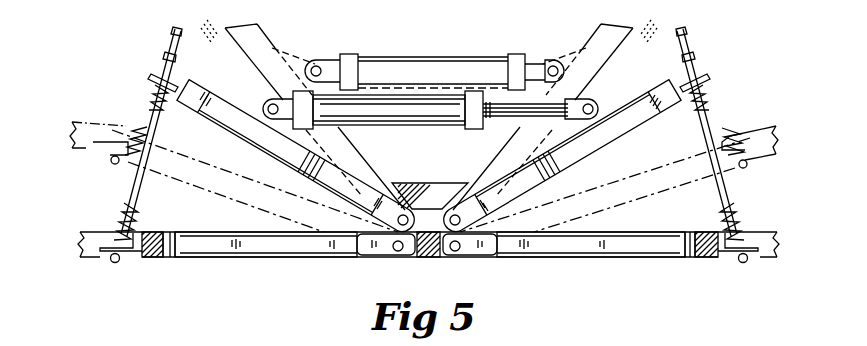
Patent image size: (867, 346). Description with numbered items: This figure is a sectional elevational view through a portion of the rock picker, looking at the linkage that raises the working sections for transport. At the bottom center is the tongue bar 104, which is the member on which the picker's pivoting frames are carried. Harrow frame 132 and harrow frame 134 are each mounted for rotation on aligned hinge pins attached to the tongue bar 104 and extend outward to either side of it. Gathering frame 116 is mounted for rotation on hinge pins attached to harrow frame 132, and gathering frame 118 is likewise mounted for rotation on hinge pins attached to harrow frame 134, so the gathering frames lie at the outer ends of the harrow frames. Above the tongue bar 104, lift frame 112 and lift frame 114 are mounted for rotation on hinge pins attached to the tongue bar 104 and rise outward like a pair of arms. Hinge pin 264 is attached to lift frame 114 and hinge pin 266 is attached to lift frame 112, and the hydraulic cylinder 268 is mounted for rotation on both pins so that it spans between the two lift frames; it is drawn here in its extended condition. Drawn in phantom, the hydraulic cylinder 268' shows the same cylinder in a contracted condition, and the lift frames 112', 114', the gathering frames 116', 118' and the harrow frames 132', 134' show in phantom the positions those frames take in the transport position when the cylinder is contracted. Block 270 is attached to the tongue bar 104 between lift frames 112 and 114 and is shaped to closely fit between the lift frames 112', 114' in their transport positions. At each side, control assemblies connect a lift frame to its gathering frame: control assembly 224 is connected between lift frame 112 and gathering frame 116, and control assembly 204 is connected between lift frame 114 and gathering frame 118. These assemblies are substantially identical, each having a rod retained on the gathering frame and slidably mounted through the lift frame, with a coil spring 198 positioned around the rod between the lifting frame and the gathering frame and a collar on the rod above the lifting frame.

The tongue bar 104 is at (432, 258).
The lift frame 112 is at (562, 156).
The lift frame (transport position) 112' is at (543, 116).
The lift frame 114 is at (288, 156).
The lift frame (transport position) 114' is at (315, 115).
The gathering frame 116 is at (751, 262).
The gathering frame (transport position) 116' is at (790, 147).
The gathering frame 118 is at (110, 265).
The gathering frame (transport position) 118' is at (83, 150).
The harrow frame 132 is at (591, 263).
The harrow frame (transport position) 132' is at (605, 185).
The harrow frame 134 is at (266, 265).
The harrow frame (transport position) 134' is at (255, 181).
The coil spring 198 is at (150, 91).
The control assembly 204 is at (174, 30).
The control assembly 224 is at (686, 30).
The hinge pin 264 is at (268, 104).
The hinge pin 266 is at (600, 100).
The hydraulic cylinder 268 is at (430, 121).
The hydraulic cylinder (contracted condition) 268' is at (434, 54).
The block 270 is at (414, 183).